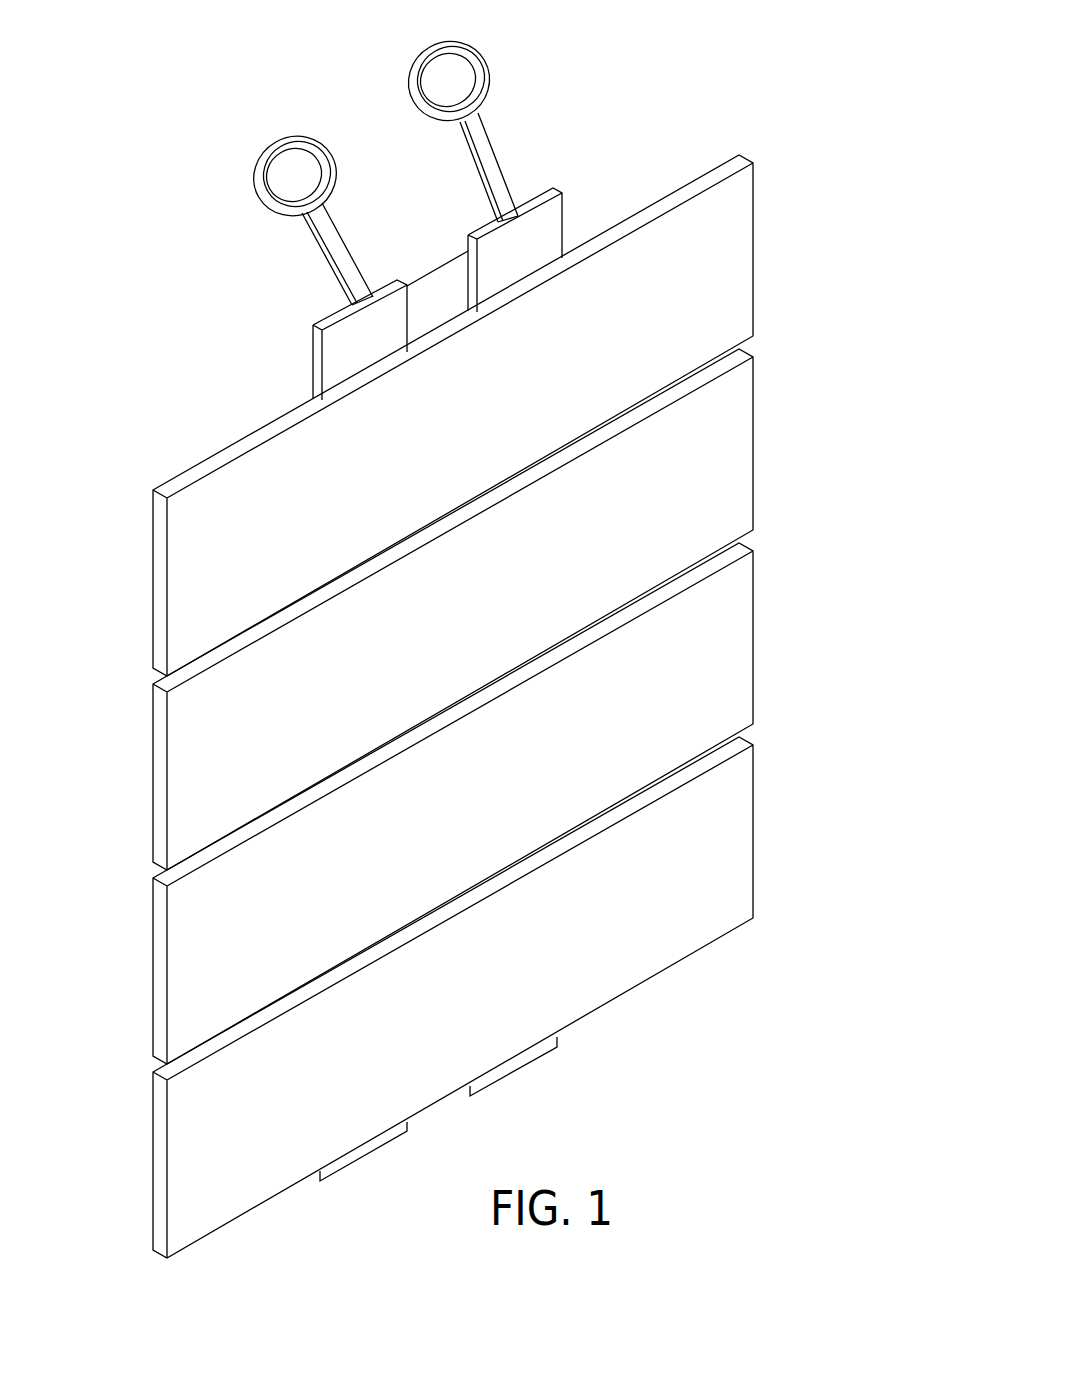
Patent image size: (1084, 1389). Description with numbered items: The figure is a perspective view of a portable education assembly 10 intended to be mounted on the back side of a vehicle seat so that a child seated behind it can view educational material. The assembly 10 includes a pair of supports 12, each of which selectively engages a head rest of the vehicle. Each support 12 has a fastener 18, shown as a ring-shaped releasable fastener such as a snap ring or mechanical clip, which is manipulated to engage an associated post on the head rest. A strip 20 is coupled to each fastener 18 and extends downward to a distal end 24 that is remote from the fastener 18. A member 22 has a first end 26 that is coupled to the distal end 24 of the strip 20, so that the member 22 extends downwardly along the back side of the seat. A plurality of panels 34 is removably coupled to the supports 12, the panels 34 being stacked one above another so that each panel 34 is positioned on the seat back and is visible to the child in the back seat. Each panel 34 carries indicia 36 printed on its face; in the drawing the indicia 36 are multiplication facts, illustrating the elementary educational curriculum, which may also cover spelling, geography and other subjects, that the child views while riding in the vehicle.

The portable education assembly 10 is at (686, 100).
The support 12 is at (393, 51).
The fastener 18 is at (256, 178).
The strip 20 is at (330, 265).
The member 22 is at (313, 327).
The distal end 24 is at (367, 307).
The first end 26 is at (468, 235).
The panel 34 is at (756, 226).
The indicia 36 is at (195, 620).